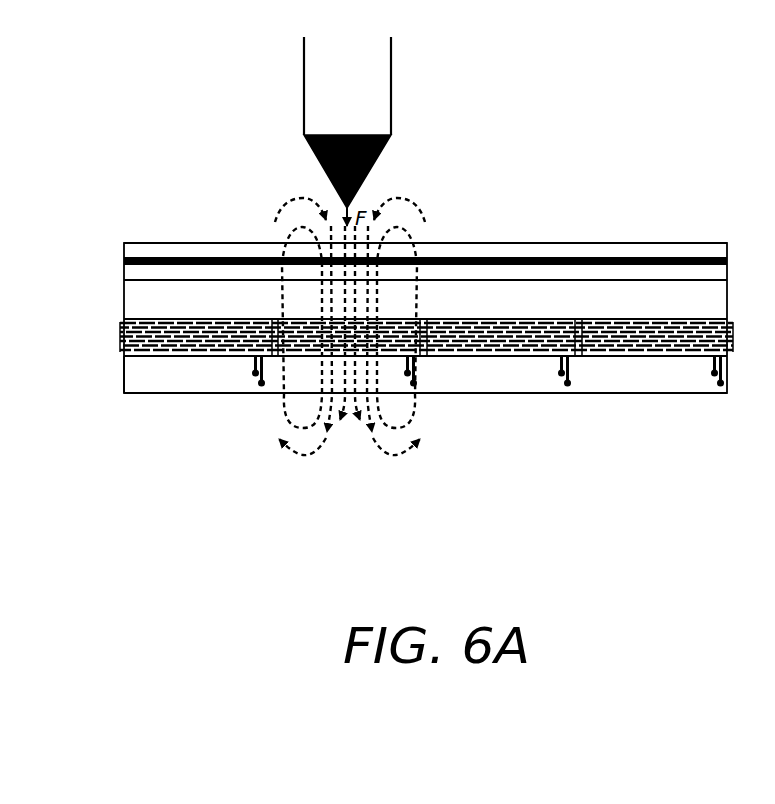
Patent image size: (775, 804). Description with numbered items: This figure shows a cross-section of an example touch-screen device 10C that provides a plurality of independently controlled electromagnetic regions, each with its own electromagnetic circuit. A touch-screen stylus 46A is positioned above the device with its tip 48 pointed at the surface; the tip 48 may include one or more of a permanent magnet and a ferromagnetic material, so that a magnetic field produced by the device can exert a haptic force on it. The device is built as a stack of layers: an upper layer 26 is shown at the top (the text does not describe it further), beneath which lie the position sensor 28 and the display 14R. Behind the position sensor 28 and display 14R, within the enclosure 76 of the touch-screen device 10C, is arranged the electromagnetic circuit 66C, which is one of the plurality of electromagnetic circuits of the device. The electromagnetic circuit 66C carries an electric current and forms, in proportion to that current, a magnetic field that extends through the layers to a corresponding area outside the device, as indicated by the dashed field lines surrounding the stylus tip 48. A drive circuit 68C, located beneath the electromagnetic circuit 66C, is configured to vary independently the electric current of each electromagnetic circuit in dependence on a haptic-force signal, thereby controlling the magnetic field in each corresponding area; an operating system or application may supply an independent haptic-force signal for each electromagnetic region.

The touch-screen stylus 46A is at (330, 98).
The tip 48 is at (336, 181).
The touch-screen device 10C is at (548, 200).
The top layer 26 is at (607, 242).
The position sensor 28 is at (708, 262).
The display 14R is at (118, 285).
The electromagnetic circuit 66C is at (302, 320).
The drive circuit 68C is at (506, 385).
The enclosure 76 is at (124, 380).